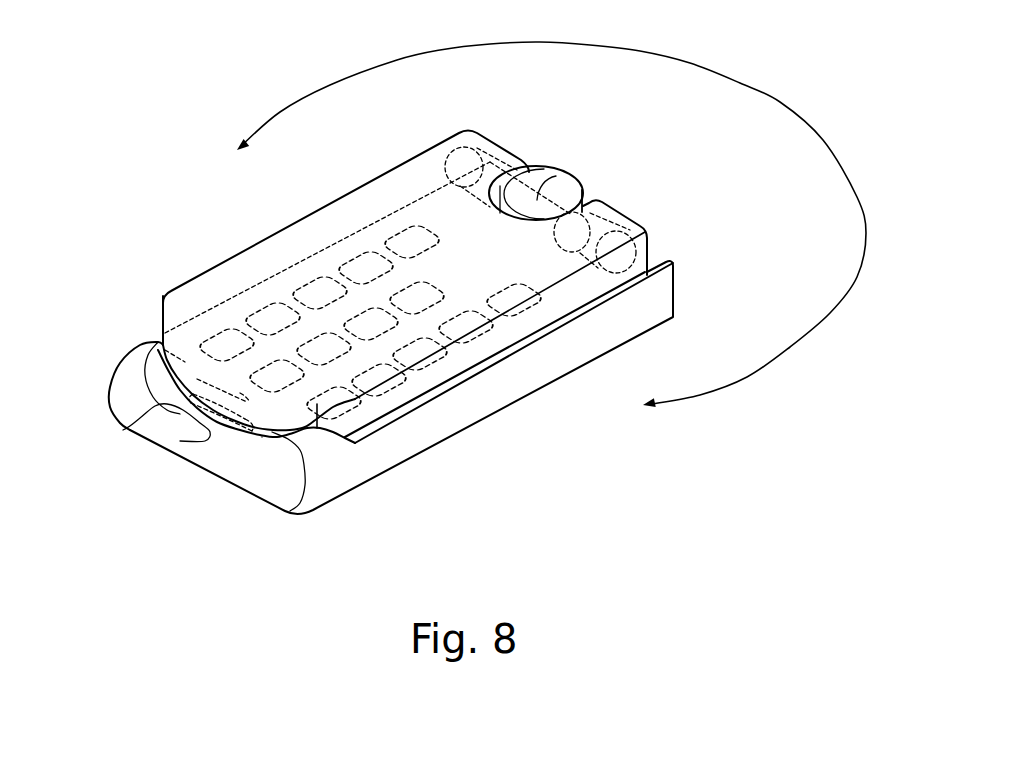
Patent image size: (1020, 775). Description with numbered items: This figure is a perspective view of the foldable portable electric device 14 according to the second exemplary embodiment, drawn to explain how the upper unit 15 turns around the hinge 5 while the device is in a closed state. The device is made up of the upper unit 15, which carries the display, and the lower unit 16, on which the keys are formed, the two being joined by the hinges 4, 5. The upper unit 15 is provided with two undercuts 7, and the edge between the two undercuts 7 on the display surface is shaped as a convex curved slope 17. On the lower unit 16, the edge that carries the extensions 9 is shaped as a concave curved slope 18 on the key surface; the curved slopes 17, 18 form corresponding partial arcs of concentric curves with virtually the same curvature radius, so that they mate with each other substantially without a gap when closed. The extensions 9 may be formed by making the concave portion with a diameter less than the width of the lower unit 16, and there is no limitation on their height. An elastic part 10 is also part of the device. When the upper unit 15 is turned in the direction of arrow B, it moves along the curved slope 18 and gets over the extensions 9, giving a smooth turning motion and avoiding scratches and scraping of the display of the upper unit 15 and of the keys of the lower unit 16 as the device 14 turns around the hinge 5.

The arrow B is at (781, 106).
The foldable portable electric device 14 is at (203, 202).
The upper unit 15 is at (230, 258).
The undercuts 7 is at (163, 325).
The extensions 9 is at (132, 368).
The convex curved slope 17 is at (123, 430).
The elastic part 10 is at (213, 416).
The concave curved slope 18 is at (262, 437).
The lower unit 16 is at (448, 417).
The hinge 4 is at (492, 172).
The hinge 5 is at (582, 177).